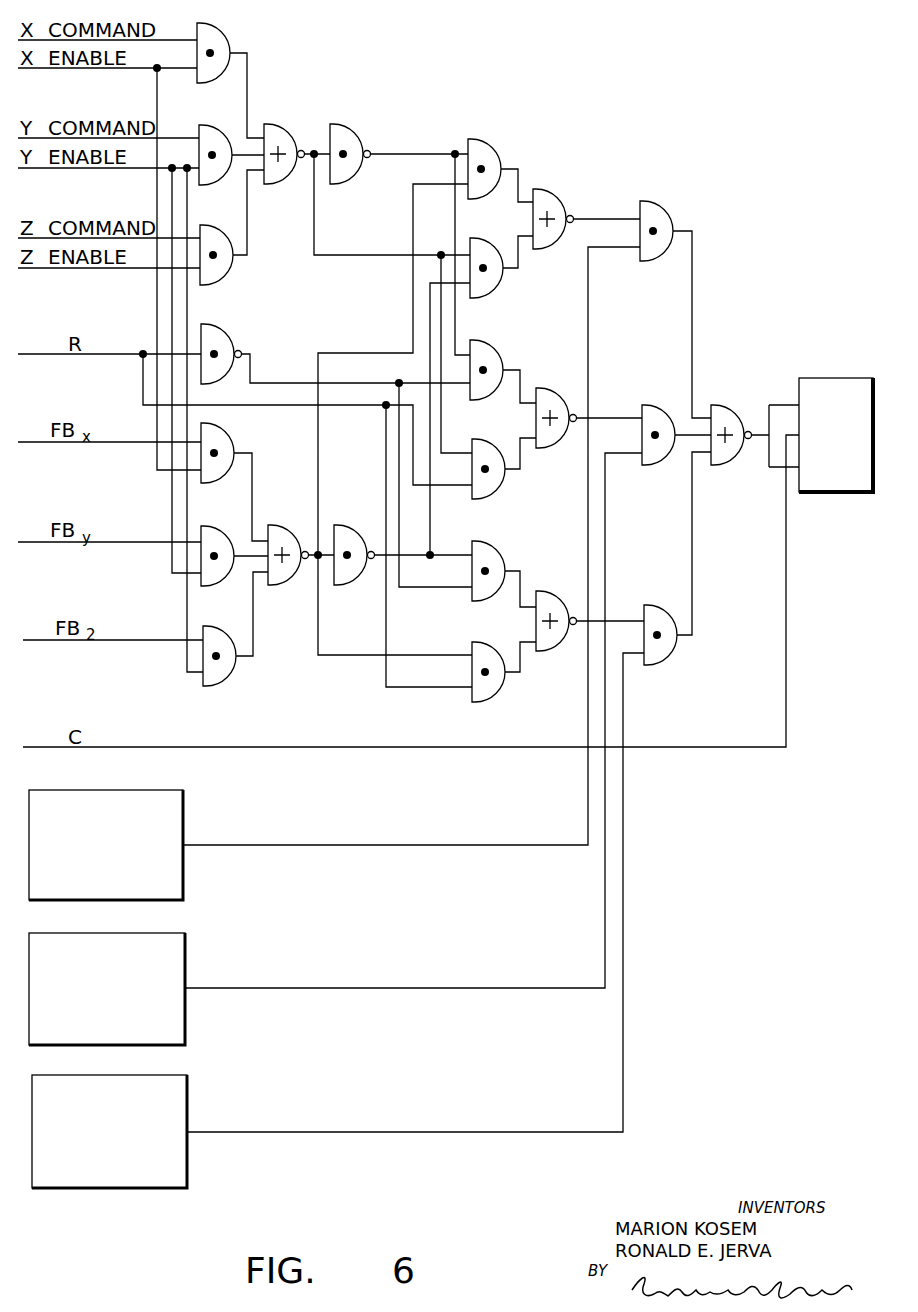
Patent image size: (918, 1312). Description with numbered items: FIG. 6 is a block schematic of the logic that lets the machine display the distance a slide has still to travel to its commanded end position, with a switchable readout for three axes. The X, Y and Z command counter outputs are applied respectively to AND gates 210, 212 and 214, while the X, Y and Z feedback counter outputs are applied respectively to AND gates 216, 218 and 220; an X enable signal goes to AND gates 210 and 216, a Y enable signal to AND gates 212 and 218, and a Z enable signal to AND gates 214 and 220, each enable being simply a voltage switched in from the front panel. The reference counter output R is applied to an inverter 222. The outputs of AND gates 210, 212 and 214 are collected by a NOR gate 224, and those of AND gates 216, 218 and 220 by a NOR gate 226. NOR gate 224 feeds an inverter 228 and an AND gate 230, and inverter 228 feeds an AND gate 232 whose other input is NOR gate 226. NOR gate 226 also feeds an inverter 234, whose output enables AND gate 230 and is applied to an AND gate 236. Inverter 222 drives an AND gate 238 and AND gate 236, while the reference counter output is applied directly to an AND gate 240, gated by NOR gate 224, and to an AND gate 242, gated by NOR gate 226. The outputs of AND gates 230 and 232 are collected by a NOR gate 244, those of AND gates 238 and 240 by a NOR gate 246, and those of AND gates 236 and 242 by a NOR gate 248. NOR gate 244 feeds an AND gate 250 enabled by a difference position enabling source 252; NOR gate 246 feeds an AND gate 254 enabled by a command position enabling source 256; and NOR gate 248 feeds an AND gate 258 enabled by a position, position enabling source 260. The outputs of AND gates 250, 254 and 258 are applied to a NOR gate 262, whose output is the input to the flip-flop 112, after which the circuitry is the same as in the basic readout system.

The AND gate 210 is at (224, 33).
The AND gate 212 is at (222, 185).
The AND gate 214 is at (223, 285).
The AND gate 216 is at (227, 430).
The AND gate 218 is at (232, 516).
The AND gate 220 is at (234, 616).
The inverter 222 is at (226, 330).
The NOR gate 224 is at (278, 184).
The NOR gate 226 is at (284, 585).
The inverter 228 is at (346, 184).
The AND gate 230 is at (493, 295).
The AND gate 232 is at (492, 142).
The inverter 234 is at (350, 585).
The AND gate 236 is at (495, 544).
The AND gate 238 is at (493, 343).
The AND gate 240 is at (495, 495).
The AND gate 242 is at (495, 698).
The NOR gate 244 is at (555, 192).
The NOR gate 246 is at (553, 390).
The NOR gate 248 is at (553, 593).
The AND gate 250 is at (664, 205).
The difference position enabling source 252 is at (184, 876).
The AND gate 254 is at (654, 406).
The command position enabling source 256 is at (186, 1026).
The AND gate 258 is at (656, 606).
The position, position enabling source 260 is at (188, 1168).
The NOR gate 262 is at (721, 406).
The flip-flop 112 is at (843, 378).